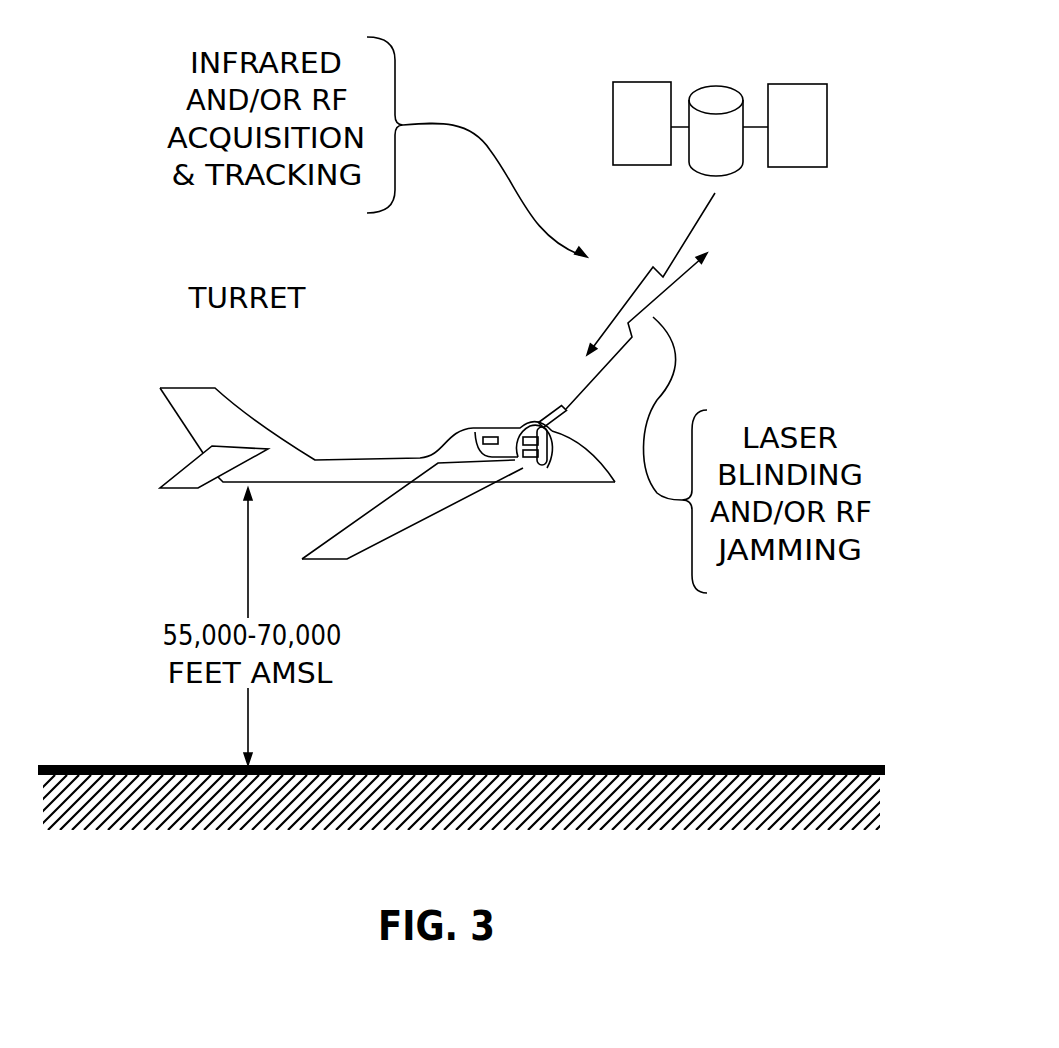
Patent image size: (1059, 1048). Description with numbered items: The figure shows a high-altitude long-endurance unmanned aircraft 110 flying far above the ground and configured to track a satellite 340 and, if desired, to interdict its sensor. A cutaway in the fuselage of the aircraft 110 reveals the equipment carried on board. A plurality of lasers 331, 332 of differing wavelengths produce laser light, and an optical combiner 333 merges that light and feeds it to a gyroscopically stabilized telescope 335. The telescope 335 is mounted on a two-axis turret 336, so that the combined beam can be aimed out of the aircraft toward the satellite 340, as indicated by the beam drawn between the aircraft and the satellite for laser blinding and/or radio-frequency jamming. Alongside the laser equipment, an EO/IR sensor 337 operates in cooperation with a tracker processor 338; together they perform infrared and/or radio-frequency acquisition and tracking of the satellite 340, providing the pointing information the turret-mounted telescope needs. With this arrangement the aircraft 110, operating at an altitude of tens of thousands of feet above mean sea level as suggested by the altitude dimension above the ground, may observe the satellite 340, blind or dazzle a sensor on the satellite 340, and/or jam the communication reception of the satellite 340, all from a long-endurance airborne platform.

The HALE unmanned aircraft 110 is at (145, 442).
The laser 331 is at (540, 462).
The laser 332 is at (533, 455).
The optical combiner 333 is at (544, 466).
The gyroscopically stabilized telescope 335 is at (547, 421).
The two-axis turret 336 is at (518, 424).
The EO/IR sensor 337 is at (537, 424).
The tracker processor 338 is at (480, 430).
The satellite 340 is at (710, 98).